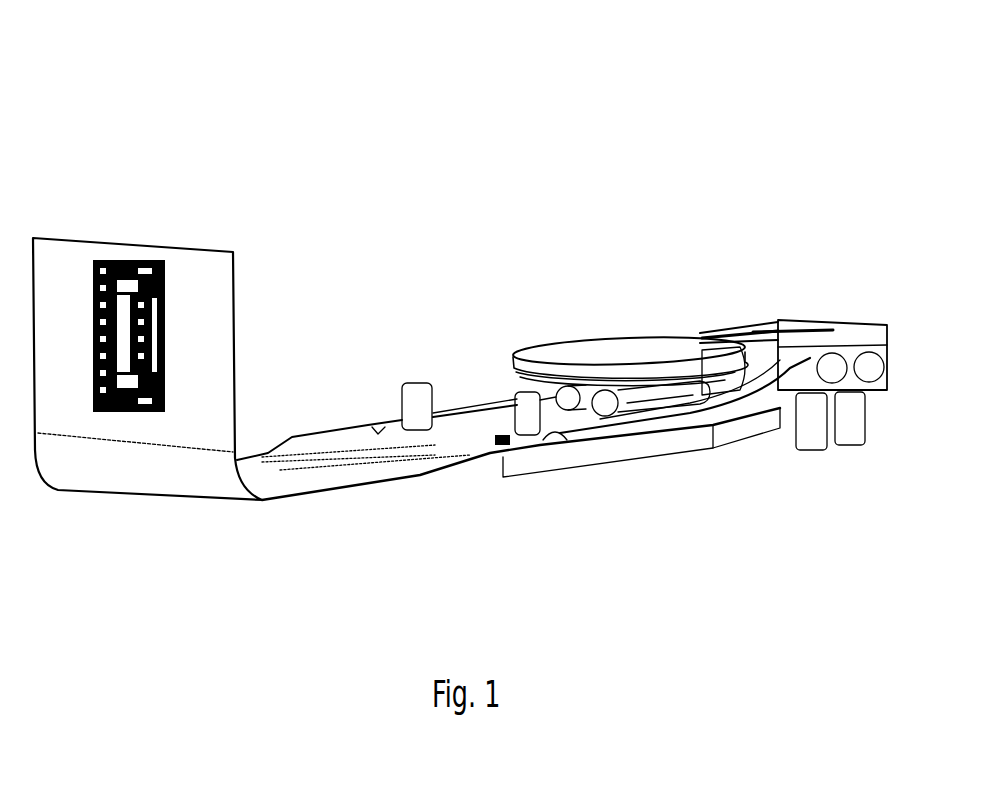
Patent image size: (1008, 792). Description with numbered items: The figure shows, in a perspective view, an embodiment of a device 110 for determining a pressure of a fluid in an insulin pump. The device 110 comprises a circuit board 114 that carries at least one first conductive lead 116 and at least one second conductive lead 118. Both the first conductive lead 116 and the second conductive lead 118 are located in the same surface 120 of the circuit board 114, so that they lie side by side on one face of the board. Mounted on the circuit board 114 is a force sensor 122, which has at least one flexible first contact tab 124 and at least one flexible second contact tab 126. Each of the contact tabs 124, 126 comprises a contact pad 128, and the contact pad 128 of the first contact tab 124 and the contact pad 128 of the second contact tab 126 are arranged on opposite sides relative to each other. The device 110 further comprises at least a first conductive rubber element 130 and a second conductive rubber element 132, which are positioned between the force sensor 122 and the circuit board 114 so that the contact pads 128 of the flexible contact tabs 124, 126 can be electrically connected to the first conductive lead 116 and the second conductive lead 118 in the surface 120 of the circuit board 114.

The device 110 is at (460, 300).
The circuit board 114 is at (492, 462).
The first conductive lead 116 is at (567, 417).
The second conductive lead 118 is at (640, 420).
The surface 120 is at (568, 440).
The force sensor 122 is at (567, 340).
The first contact tab 124 is at (638, 334).
The second contact tab 126 is at (693, 336).
The contact pad 128 is at (793, 331).
The first conductive rubber element 130 is at (560, 390).
The second conductive rubber element 132 is at (601, 382).